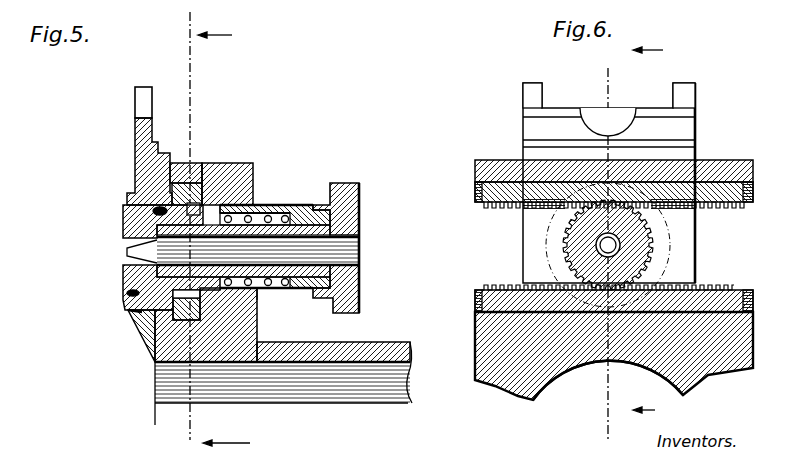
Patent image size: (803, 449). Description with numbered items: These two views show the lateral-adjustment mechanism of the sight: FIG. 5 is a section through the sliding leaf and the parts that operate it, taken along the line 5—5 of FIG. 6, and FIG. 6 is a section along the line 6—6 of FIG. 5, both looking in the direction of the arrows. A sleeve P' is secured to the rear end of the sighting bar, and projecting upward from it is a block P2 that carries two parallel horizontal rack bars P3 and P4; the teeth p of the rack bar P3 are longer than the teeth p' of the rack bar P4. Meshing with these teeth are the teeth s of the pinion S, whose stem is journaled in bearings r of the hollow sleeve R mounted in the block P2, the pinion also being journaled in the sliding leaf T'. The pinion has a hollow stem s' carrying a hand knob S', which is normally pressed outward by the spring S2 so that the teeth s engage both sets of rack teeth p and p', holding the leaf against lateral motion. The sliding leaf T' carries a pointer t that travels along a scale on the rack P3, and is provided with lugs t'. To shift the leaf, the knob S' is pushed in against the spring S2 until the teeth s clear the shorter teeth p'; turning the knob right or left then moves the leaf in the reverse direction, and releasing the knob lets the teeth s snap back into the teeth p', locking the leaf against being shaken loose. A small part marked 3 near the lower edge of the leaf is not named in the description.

In FIG. 5, the section line 6— 6 is at (217, 223).
In FIG. 6, the section line 5— 5 is at (630, 242).
In FIG. 5, the lugs t' is at (130, 95).
In FIG. 6, the lugs t' is at (600, 79).
In FIG. 5, the sliding leaf T' is at (132, 161).
In FIG. 6, the sliding leaf T' is at (583, 183).
In FIG. 5, the pointer t is at (136, 347).
In FIG. 6, the pointer t is at (608, 383).
In FIG. 5, the teeth of the pinion s is at (136, 193).
In FIG. 6, the teeth of the pinion s is at (573, 245).
In FIG. 5, the pinion S is at (222, 257).
In FIG. 6, the pinion S is at (638, 245).
In FIG. 5, the hollow stem s' is at (248, 198).
In FIG. 5, the hand knob S' is at (349, 248).
In FIG. 5, the spring S2 is at (287, 220).
In FIG. 5, the hollow sleeve R is at (293, 209).
In FIG. 5, the screw 3 is at (128, 310).
In FIG. 5, the teeth of the rack bar P3 p is at (163, 349).
In FIG. 6, the teeth of the rack bar P3 p is at (614, 282).
In FIG. 5, the teeth of the rack bar P4 p' is at (205, 172).
In FIG. 6, the teeth of the rack bar P4 p' is at (751, 196).
In FIG. 5, the sleeve P' is at (283, 386).
In FIG. 6, the sleeve P' is at (614, 375).
In FIG. 5, the block P2 is at (240, 205).
In FIG. 6, the block P2 is at (493, 165).
In FIG. 5, the rack bar P3 is at (192, 330).
In FIG. 6, the rack bar P3 is at (732, 300).
In FIG. 5, the rack bar P4 is at (187, 183).
In FIG. 6, the rack bar P4 is at (700, 172).
In FIG. 5, the bearings r is at (223, 212).